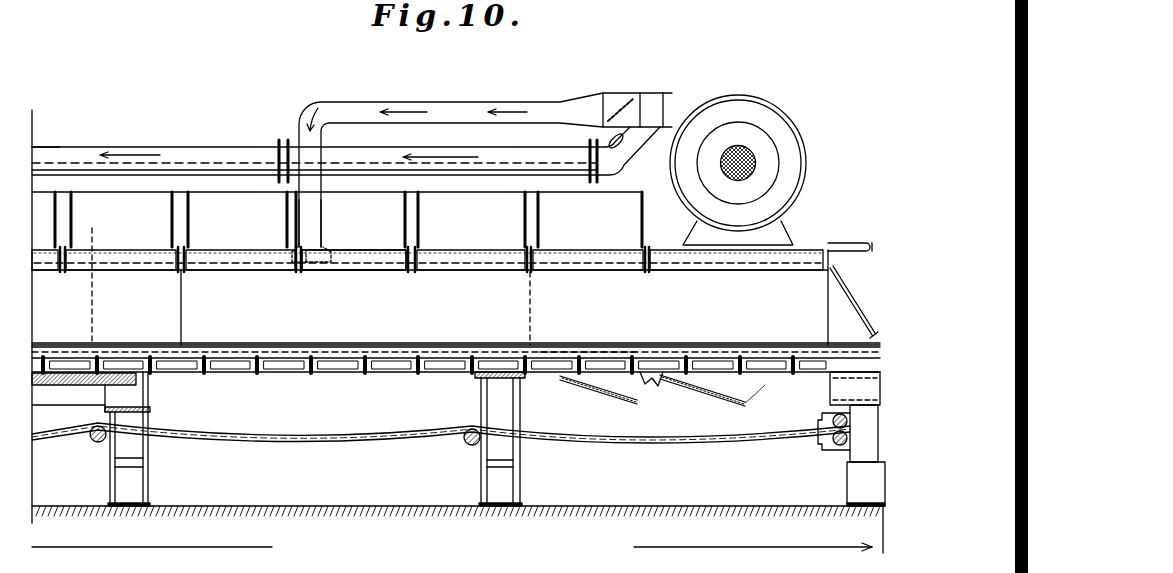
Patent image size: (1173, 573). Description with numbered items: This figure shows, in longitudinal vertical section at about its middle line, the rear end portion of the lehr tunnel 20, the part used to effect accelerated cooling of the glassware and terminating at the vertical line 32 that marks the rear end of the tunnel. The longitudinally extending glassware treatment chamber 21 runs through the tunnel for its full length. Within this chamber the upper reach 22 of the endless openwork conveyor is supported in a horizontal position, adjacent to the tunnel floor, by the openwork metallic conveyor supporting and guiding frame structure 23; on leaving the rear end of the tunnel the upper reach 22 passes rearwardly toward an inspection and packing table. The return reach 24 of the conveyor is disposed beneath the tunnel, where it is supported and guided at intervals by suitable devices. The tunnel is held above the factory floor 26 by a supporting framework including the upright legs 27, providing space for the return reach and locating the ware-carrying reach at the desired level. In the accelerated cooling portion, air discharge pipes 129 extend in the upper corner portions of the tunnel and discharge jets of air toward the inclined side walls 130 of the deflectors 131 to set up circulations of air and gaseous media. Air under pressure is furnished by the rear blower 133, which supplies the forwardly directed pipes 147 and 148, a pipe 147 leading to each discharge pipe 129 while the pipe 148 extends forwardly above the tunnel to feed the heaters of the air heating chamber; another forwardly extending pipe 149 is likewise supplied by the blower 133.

The lehr tunnel 20 is at (321, 387).
The glassware treatment chamber 21 is at (456, 286).
The upper reach of the endless conveyor 22 is at (597, 320).
The conveyor supporting and guiding frame structure 23 is at (705, 352).
The return reach of the conveyor 24 is at (418, 437).
The factory floor 26 is at (722, 505).
The upright legs 27 is at (137, 479).
The vertical line at rear end of tunnel 32 is at (882, 522).
The air discharge pipes 129 is at (255, 272).
The inclined side walls 130 is at (383, 263).
The deflectors 131 is at (342, 270).
The rear blower 133 is at (782, 132).
The pipe 147 is at (437, 103).
The pipe 148 is at (437, 150).
The forwardly extending pipe 149 is at (57, 172).